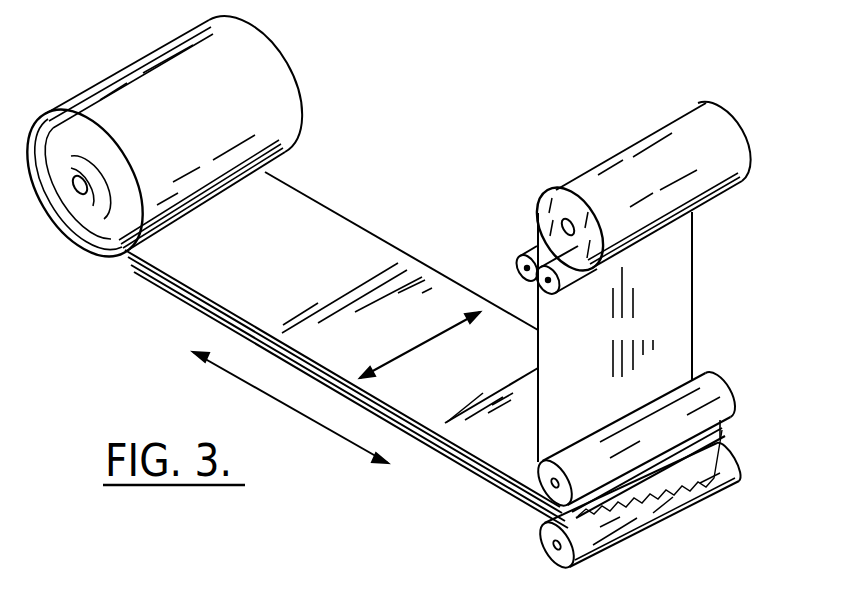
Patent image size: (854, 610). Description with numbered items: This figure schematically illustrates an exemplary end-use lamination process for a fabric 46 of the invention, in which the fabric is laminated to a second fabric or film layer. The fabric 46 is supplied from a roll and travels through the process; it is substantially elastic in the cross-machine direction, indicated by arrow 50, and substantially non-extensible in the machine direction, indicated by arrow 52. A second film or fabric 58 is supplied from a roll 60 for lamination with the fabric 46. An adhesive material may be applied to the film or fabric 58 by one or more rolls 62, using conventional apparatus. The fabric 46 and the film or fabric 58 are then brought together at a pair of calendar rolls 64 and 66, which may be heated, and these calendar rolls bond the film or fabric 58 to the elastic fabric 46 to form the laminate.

The fabric 46 is at (310, 223).
The arrow 50 is at (419, 346).
The arrow 52 is at (347, 444).
The second film or fabric 58 is at (681, 303).
The roll 60 is at (725, 123).
The rolls 62 is at (533, 255).
The calendar roll 64 is at (720, 390).
The calendar roll 66 is at (725, 461).